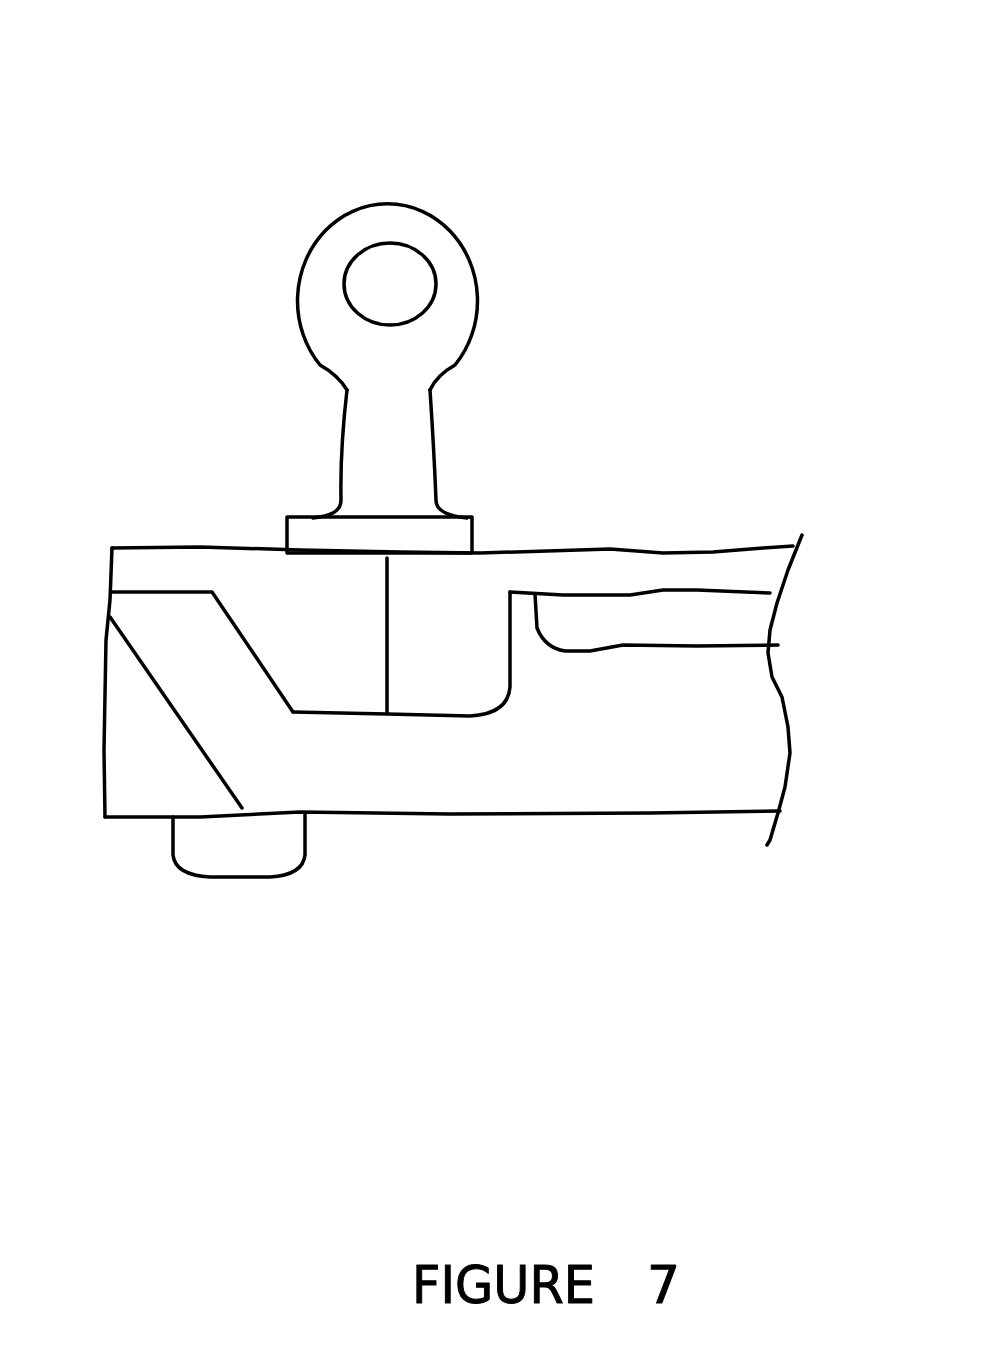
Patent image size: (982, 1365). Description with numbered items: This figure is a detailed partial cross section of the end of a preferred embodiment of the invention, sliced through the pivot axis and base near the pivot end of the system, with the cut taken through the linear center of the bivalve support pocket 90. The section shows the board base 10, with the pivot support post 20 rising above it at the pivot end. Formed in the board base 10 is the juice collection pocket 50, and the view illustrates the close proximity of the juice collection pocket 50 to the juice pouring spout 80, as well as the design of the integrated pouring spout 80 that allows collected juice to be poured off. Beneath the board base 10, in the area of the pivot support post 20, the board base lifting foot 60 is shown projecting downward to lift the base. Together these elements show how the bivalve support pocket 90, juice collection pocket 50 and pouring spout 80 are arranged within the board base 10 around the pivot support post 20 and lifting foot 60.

The board base 10 is at (523, 772).
The pivot support post 20 is at (435, 250).
The juice collection pocket 50 is at (447, 660).
The board base lifting foot 60 is at (245, 848).
The juice pouring spout 80 is at (238, 630).
The bivalve support pocket 90 is at (647, 617).